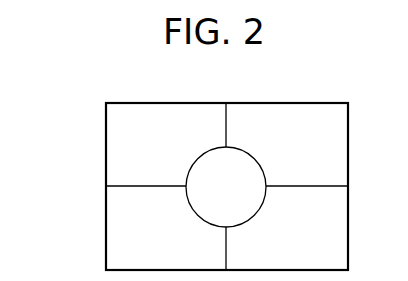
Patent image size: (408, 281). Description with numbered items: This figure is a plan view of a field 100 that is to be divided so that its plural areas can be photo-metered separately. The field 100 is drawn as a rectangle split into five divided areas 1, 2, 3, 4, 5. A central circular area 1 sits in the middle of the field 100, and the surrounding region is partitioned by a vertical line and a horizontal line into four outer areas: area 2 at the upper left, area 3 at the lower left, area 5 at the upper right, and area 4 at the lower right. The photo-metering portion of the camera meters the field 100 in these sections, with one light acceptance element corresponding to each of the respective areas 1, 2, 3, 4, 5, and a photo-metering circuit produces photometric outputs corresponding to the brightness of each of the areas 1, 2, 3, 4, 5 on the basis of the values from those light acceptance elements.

The field 100 is at (287, 103).
The divided area 1 is at (249, 156).
The divided area 2 is at (114, 141).
The divided area 3 is at (114, 224).
The divided area 4 is at (340, 236).
The divided area 5 is at (340, 156).